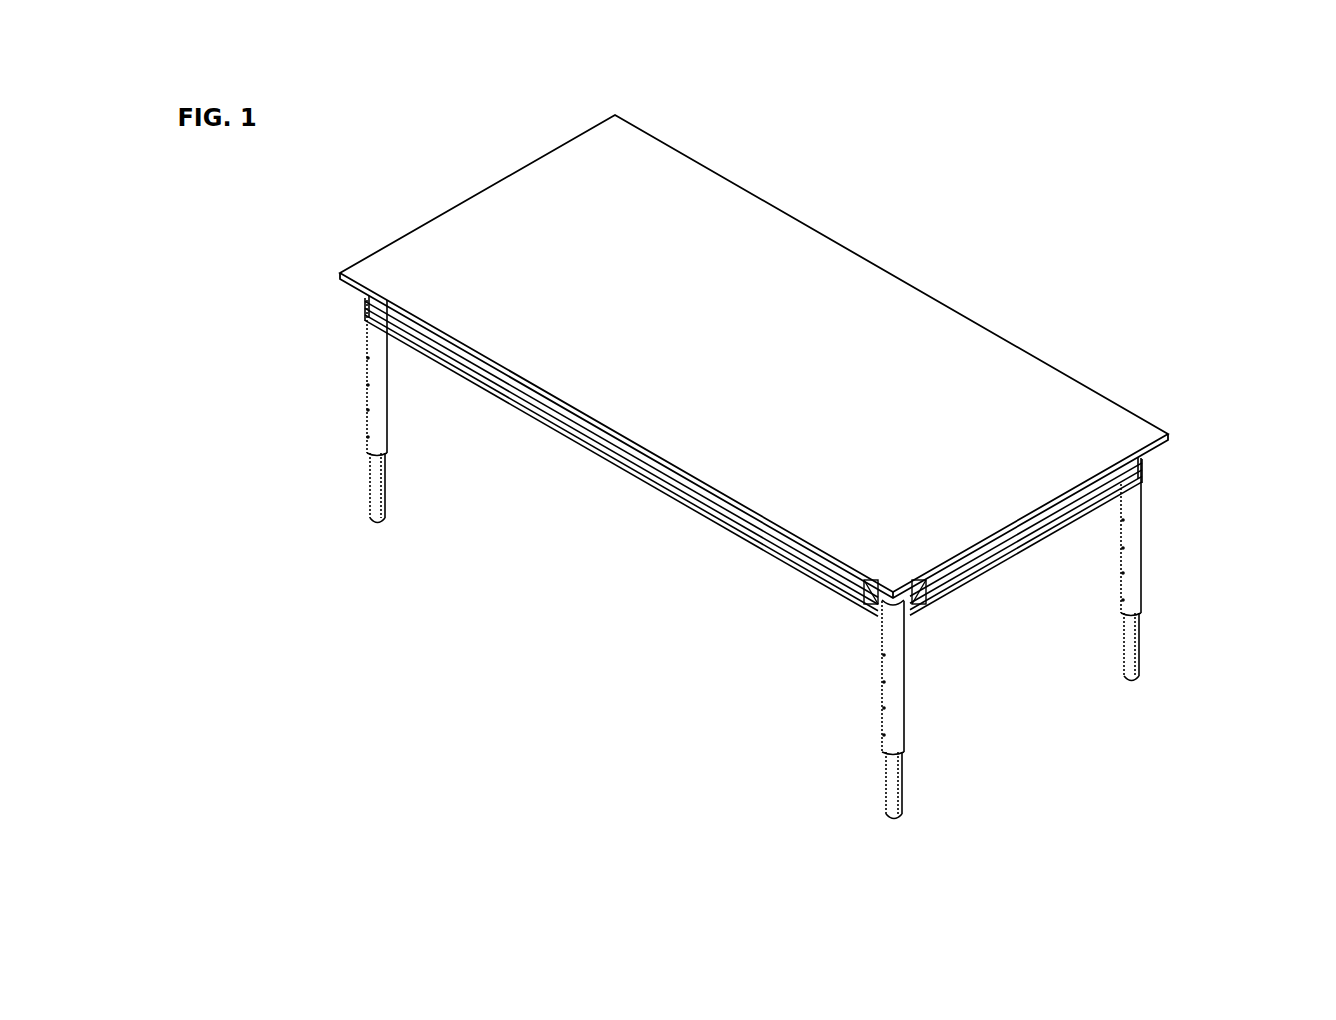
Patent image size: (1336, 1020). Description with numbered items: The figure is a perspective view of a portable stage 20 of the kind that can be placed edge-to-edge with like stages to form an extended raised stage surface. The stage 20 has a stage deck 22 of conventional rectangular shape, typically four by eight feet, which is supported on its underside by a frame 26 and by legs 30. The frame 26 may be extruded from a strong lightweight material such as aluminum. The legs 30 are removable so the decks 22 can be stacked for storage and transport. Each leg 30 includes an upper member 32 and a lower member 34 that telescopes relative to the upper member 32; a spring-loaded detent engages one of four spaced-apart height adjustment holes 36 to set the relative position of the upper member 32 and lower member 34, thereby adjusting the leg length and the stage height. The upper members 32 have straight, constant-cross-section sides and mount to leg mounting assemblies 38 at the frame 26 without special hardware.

The portable stage 20 is at (892, 137).
The stage deck 22 is at (903, 301).
The frame 26 is at (741, 529).
The leg 30 is at (741, 571).
The upper member 32 is at (377, 343).
The lower member 34 is at (376, 498).
The height adjustment holes 36 is at (367, 358).
The leg mounting assembly 38 is at (884, 601).